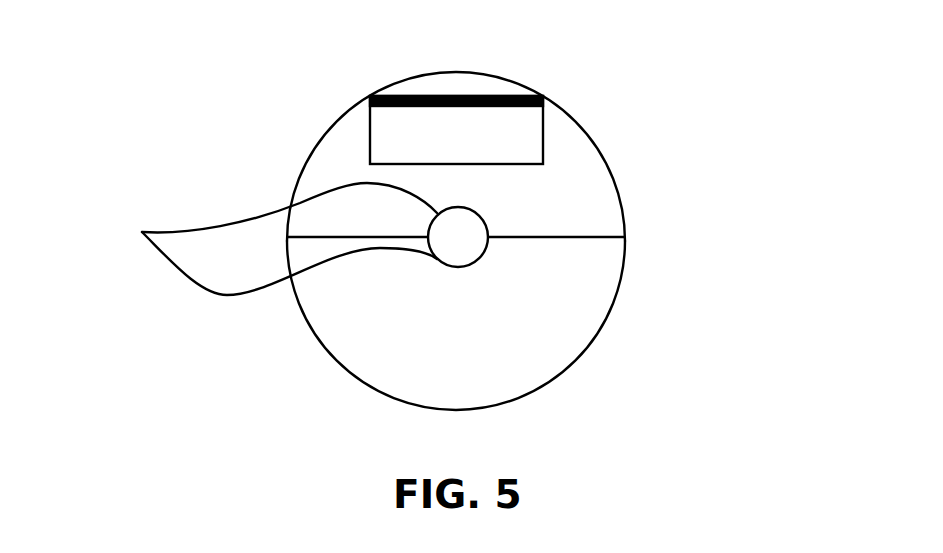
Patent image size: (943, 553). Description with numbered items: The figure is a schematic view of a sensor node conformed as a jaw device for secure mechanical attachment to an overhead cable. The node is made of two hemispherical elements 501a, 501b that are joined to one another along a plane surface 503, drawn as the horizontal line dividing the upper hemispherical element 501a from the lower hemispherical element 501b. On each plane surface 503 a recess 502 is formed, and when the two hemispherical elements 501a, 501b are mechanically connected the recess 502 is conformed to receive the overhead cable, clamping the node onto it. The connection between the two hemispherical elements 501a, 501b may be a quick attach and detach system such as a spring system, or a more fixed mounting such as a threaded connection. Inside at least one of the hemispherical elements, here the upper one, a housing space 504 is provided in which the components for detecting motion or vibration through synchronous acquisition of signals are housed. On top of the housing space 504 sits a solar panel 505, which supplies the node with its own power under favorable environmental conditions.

The hemispherical element 501a is at (573, 178).
The hemispherical element 501b is at (573, 328).
The recess 502 is at (283, 239).
The plane surface 503 is at (583, 236).
The housing space 504 is at (400, 138).
The solar panel 505 is at (500, 95).